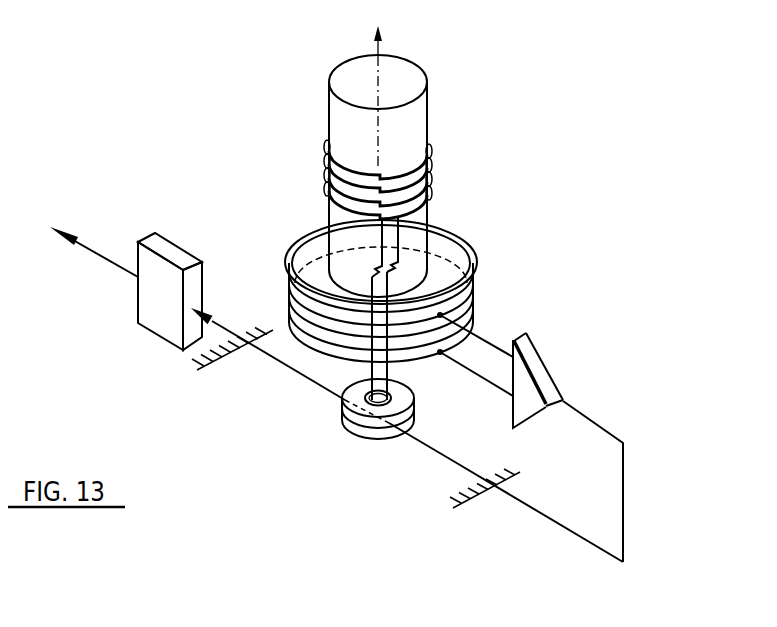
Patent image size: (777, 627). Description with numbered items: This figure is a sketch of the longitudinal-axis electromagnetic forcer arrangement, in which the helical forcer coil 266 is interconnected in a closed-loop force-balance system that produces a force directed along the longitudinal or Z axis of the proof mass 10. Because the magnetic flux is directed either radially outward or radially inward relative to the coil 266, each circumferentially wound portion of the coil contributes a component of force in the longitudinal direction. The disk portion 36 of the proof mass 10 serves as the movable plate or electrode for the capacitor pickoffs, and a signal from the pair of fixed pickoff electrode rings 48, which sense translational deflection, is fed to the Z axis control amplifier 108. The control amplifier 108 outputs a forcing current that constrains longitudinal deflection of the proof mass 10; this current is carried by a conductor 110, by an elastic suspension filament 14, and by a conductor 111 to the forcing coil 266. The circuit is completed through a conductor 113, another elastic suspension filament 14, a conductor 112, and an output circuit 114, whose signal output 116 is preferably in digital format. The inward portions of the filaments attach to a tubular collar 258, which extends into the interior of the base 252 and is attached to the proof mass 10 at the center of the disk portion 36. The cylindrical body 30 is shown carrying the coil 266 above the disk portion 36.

The proof mass 10 is at (310, 67).
The cylindrical body 30 is at (418, 114).
The helical forcer coil 266 is at (330, 160).
The fixed pickoff electrode rings 48 is at (320, 238).
The proof mass disk portion 36 is at (288, 325).
The conductor 113 is at (372, 373).
The conductor 111 is at (391, 374).
The tubular collar 258 is at (382, 436).
The elastic suspension filament 14 is at (420, 448).
The output circuit 114 is at (174, 321).
The signal output 116 is at (113, 266).
The conductor 112 is at (212, 318).
The conductor 110 is at (624, 486).
The Z axis control amplifier 108 is at (541, 379).
The base 252 is at (213, 374).